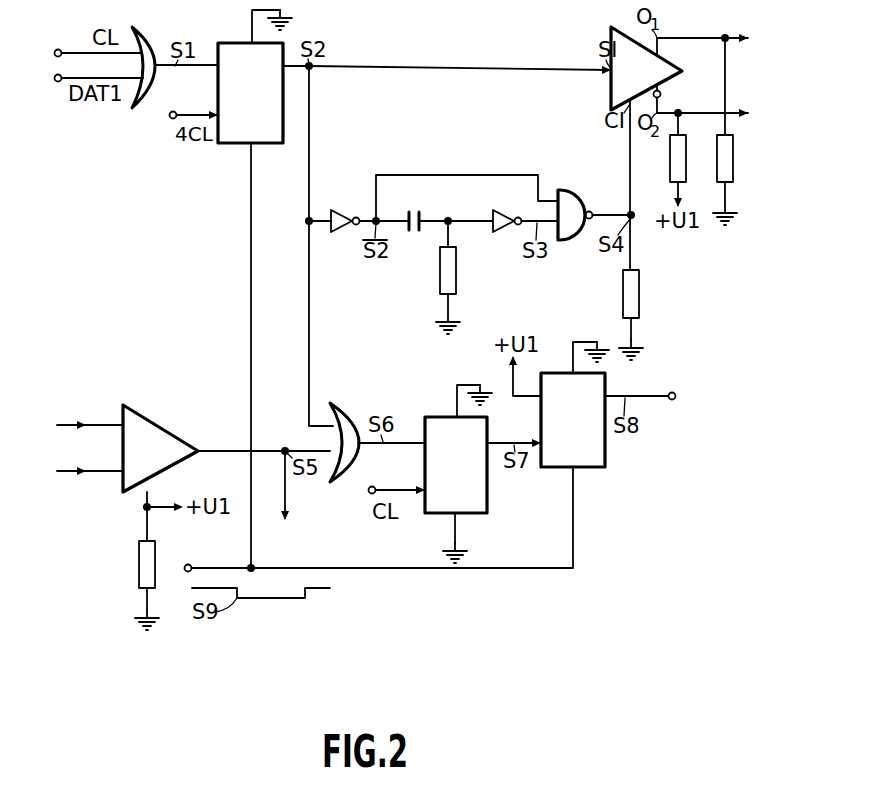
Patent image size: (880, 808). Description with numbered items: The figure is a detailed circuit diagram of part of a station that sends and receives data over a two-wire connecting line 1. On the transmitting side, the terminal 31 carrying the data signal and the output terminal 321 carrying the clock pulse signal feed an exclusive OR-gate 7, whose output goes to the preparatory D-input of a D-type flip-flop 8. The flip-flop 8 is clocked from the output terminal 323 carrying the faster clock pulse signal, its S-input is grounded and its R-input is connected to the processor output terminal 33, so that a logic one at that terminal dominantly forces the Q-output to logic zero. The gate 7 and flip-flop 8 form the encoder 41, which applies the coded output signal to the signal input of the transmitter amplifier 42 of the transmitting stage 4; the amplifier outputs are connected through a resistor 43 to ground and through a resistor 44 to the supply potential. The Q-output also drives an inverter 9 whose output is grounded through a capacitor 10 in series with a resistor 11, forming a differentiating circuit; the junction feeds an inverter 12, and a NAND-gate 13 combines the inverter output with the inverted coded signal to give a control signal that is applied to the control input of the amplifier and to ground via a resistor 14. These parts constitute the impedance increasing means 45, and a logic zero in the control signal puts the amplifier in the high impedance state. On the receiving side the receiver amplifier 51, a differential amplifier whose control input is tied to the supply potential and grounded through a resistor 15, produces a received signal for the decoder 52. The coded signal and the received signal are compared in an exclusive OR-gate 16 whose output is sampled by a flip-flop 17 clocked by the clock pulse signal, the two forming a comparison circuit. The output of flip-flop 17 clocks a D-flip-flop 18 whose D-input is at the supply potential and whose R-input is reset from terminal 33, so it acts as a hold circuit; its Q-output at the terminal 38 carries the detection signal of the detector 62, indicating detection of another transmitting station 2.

The connecting line 1 is at (744, 30).
The transmitting station 2 is at (626, 586).
The transmitting stage 4 is at (462, 94).
The encoder 41 is at (171, 191).
The transmitter amplifier 42 is at (610, 32).
The resistor 43 is at (733, 170).
The resistor 44 is at (670, 154).
The impedance increasing means 45 is at (503, 294).
The exclusive OR-gate 7 is at (148, 100).
The D-type flip-flop 8 is at (236, 147).
The inverter 9 is at (341, 232).
The capacitor 10 is at (421, 211).
The resistor 11 is at (440, 263).
The inverter 12 is at (503, 232).
The NAND-gate 13 is at (581, 188).
The resistor 14 is at (639, 292).
The resistor 15 is at (139, 566).
The exclusive OR-gate 16 is at (352, 414).
The flip-flop 17 is at (440, 520).
The D-flip-flop 18 is at (586, 468).
The terminal 31 is at (57, 82).
The processor output terminal 33 is at (188, 564).
The terminal 38 is at (674, 400).
The receiver amplifier 51 is at (148, 418).
The decoder 52 is at (282, 500).
The detector 62 is at (518, 541).
The output terminal 321 is at (372, 486).
The output terminal 323 is at (173, 111).